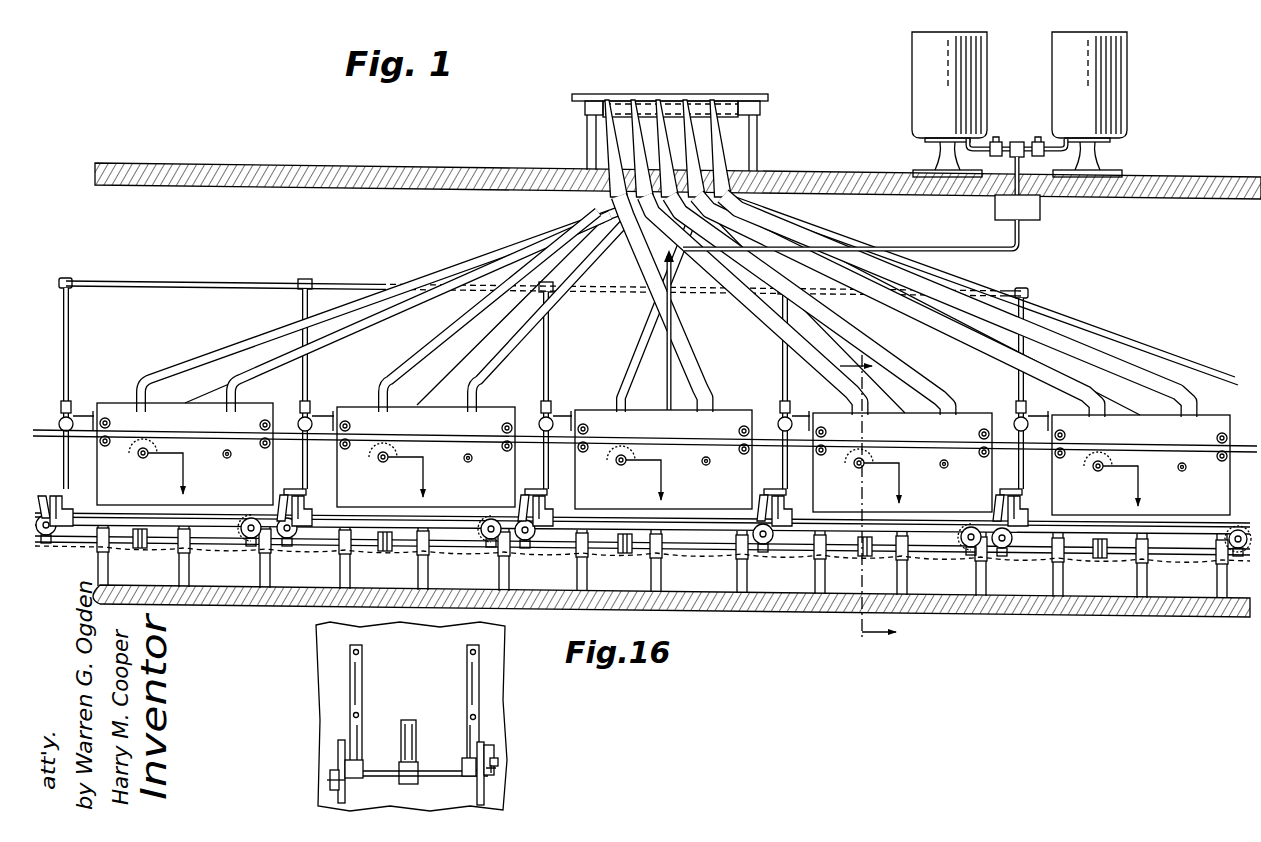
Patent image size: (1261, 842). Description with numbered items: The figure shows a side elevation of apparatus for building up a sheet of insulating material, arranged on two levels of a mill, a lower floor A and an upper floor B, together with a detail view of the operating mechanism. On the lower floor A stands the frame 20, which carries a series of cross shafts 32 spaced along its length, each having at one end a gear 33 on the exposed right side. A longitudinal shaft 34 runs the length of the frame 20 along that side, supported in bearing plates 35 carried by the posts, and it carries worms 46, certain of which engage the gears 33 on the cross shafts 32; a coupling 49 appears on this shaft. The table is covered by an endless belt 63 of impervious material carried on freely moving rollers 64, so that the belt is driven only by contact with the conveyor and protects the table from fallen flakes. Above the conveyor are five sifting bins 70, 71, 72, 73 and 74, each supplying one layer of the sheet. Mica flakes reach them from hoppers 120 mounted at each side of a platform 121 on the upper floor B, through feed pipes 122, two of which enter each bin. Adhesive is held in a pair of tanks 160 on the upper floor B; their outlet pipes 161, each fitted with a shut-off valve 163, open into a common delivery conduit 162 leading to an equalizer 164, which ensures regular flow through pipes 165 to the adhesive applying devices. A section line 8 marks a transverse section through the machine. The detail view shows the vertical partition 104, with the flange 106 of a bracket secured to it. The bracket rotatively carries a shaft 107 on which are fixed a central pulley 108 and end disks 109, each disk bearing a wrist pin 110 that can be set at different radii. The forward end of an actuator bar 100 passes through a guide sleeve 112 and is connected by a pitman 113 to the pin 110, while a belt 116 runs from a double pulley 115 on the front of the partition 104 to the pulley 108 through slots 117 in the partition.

In FIG. 1, the upper floor B is at (413, 164).
In FIG. 1, the lower floor A is at (478, 599).
In FIG. 1, the platform 121 is at (757, 92).
In FIG. 1, the hoppers 120 is at (703, 154).
In FIG. 1, the feed pipes 122 is at (620, 264).
In FIG. 1, the tanks 160 is at (911, 80).
In FIG. 1, the outlet pipe 161 is at (940, 152).
In FIG. 1, the shut-off valve 163 is at (1017, 127).
In FIG. 1, the delivery conduit 162 is at (1012, 162).
In FIG. 1, the equalizer 164 is at (1041, 208).
In FIG. 1, the pipes 165 is at (1000, 251).
In FIG. 1, the sifting bin 74 is at (207, 396).
In FIG. 1, the sifting bin 73 is at (447, 398).
In FIG. 1, the sifting bin 72 is at (675, 400).
In FIG. 1, the sifting bin 71 is at (915, 403).
In FIG. 1, the sifting bin 70 is at (1155, 406).
In FIG. 1, the actuator bar 100 is at (969, 444).
In FIG. 16, the actuator bar 100 is at (345, 764).
In FIG. 1, the frame 20 is at (632, 500).
In FIG. 1, the bearing plates 35 is at (580, 561).
In FIG. 1, the shaft 34 is at (224, 546).
In FIG. 1, the coupling 49 is at (620, 557).
In FIG. 1, the worms 46 is at (86, 556).
In FIG. 1, the gear 33 is at (252, 518).
In FIG. 1, the cross shafts 32 is at (492, 519).
In FIG. 1, the rollers 64 is at (1044, 541).
In FIG. 1, the endless belt 63 is at (456, 548).
In FIG. 1, the section line 8 is at (861, 500).
In FIG. 16, the partition 104 is at (333, 641).
In FIG. 16, the flange 106 is at (348, 666).
In FIG. 16, the belt 116 is at (400, 742).
In FIG. 16, the slots 117 is at (416, 722).
In FIG. 16, the pulley 108 is at (418, 762).
In FIG. 16, the shaft 107 is at (387, 777).
In FIG. 16, the disks 109 is at (336, 746).
In FIG. 16, the double pulley 115 is at (329, 782).
In FIG. 16, the guide sleeve 112 is at (490, 748).
In FIG. 16, the wrist pin 110 is at (497, 760).
In FIG. 16, the pitman 113 is at (496, 770).